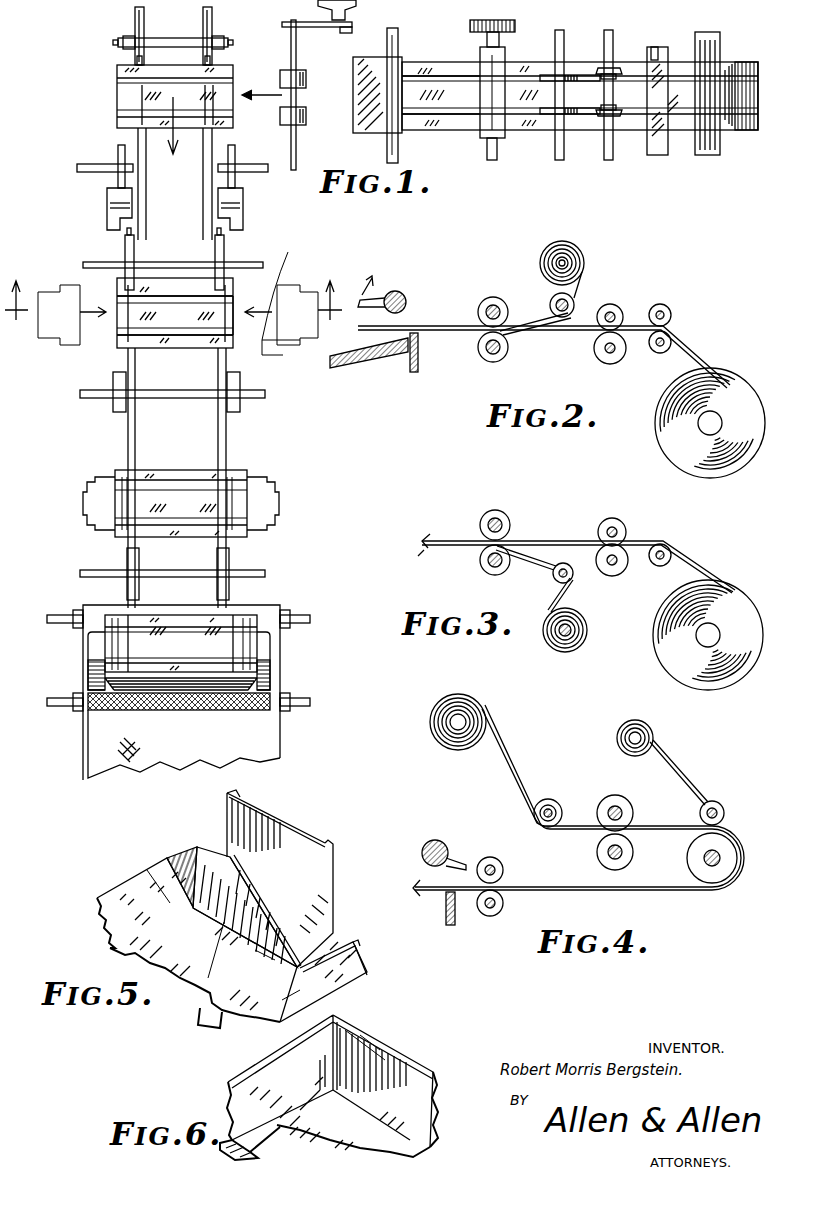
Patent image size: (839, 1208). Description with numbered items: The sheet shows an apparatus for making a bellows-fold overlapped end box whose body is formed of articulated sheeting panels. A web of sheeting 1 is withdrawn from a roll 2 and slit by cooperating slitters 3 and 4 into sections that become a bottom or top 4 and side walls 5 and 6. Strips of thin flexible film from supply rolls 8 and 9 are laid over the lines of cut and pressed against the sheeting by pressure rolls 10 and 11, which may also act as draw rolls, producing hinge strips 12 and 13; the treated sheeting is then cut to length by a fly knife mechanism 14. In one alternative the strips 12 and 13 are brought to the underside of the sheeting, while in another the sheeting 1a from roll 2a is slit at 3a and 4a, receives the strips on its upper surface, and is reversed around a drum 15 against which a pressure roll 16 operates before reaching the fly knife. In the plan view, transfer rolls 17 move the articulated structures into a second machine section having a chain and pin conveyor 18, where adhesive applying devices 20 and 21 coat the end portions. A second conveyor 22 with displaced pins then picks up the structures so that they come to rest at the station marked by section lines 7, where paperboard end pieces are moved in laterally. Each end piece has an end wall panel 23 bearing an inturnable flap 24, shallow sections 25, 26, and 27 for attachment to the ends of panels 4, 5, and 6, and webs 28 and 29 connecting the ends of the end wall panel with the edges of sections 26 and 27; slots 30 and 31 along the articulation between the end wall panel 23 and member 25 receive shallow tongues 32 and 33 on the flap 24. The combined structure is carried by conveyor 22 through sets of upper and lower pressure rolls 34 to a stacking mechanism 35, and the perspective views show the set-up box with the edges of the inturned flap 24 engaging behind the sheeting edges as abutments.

In FIG. 1, the web of sheeting 1 is at (670, 101).
In FIG. 2, the web of sheeting 1 is at (688, 345).
In FIG. 3, the web of sheeting 1 is at (700, 562).
In FIG. 4, the sheeting 1a is at (505, 756).
In FIG. 1, the roll 2 is at (735, 130).
In FIG. 2, the roll 2 is at (722, 470).
In FIG. 3, the roll 2 is at (718, 685).
In FIG. 4, the roll 2a is at (481, 702).
In FIG. 1, the slitter 3 is at (618, 80).
In FIG. 2, the slitter 3 is at (618, 305).
In FIG. 3, the slitter 3 is at (625, 524).
In FIG. 4, the slitter 3a is at (602, 796).
In FIG. 1, the slitter / bottom or top panel 4 is at (175, 313).
In FIG. 2, the slitter / bottom or top panel 4 is at (618, 365).
In FIG. 3, the slitter / bottom or top panel 4 is at (612, 578).
In FIG. 5, the slitter / bottom or top panel 4 is at (203, 968).
In FIG. 6, the slitter / bottom or top panel 4 is at (308, 1140).
In FIG. 4, the slitter 4a is at (633, 848).
In FIG. 1, the side wall 5 is at (178, 274).
In FIG. 5, the side wall 5 is at (118, 892).
In FIG. 6, the side wall 5 is at (245, 1082).
In FIG. 1, the side wall 6 is at (168, 348).
In FIG. 5, the side wall 6 is at (342, 985).
In FIG. 1, the section lines 7 is at (173, 285).
In FIG. 1, the supply roll 8 is at (570, 75).
In FIG. 1, the supply roll 9 is at (572, 118).
In FIG. 2, the supply roll 9 is at (583, 262).
In FIG. 3, the supply roll 9 is at (570, 654).
In FIG. 4, the supply roll 9 is at (651, 732).
In FIG. 2, the pressure roll 10 is at (488, 298).
In FIG. 3, the pressure roll 10 is at (505, 516).
In FIG. 4, the pressure roll 10 is at (500, 864).
In FIG. 2, the pressure roll 11 is at (505, 358).
In FIG. 3, the pressure roll 11 is at (506, 574).
In FIG. 4, the pressure roll 11 is at (503, 905).
In FIG. 1, the hinge strip 12 is at (410, 70).
In FIG. 6, the hinge strip 12 is at (250, 1154).
In FIG. 1, the hinge strip 13 is at (412, 118).
In FIG. 3, the hinge strip 13 is at (568, 584).
In FIG. 4, the hinge strip 13 is at (681, 778).
In FIG. 2, the fly knife mechanism 14 is at (400, 292).
In FIG. 4, the fly knife mechanism 14 is at (440, 840).
In FIG. 4, the drum 15 is at (722, 880).
In FIG. 4, the pressure roll 16 is at (721, 806).
In FIG. 1, the transfer rolls 17 is at (306, 70).
In FIG. 1, the conveyor 18 is at (200, 25).
In FIG. 1, the adhesive applying device 20 is at (107, 190).
In FIG. 1, the adhesive applying device 21 is at (243, 190).
In FIG. 1, the second conveyor 22 is at (124, 248).
In FIG. 1, the end wall panel 23 is at (298, 298).
In FIG. 5, the end wall panel 23 is at (245, 907).
In FIG. 5, the inturnable flap 24 is at (280, 880).
In FIG. 6, the inturnable flap 24 is at (385, 1081).
In FIG. 1, the shallow section 25 is at (235, 300).
In FIG. 5, the shallow section 25 is at (223, 935).
In FIG. 1, the shallow section 26 is at (293, 285).
In FIG. 1, the shallow section 27 is at (268, 355).
In FIG. 5, the web 28 is at (185, 858).
In FIG. 5, the web 29 is at (356, 947).
In FIG. 5, the slot 30 is at (226, 903).
In FIG. 5, the slot 31 is at (272, 952).
In FIG. 5, the tongue 32 is at (247, 799).
In FIG. 5, the tongue 33 is at (322, 843).
In FIG. 1, the pressure rolls 34 is at (115, 408).
In FIG. 1, the stacking mechanism 35 is at (281, 646).